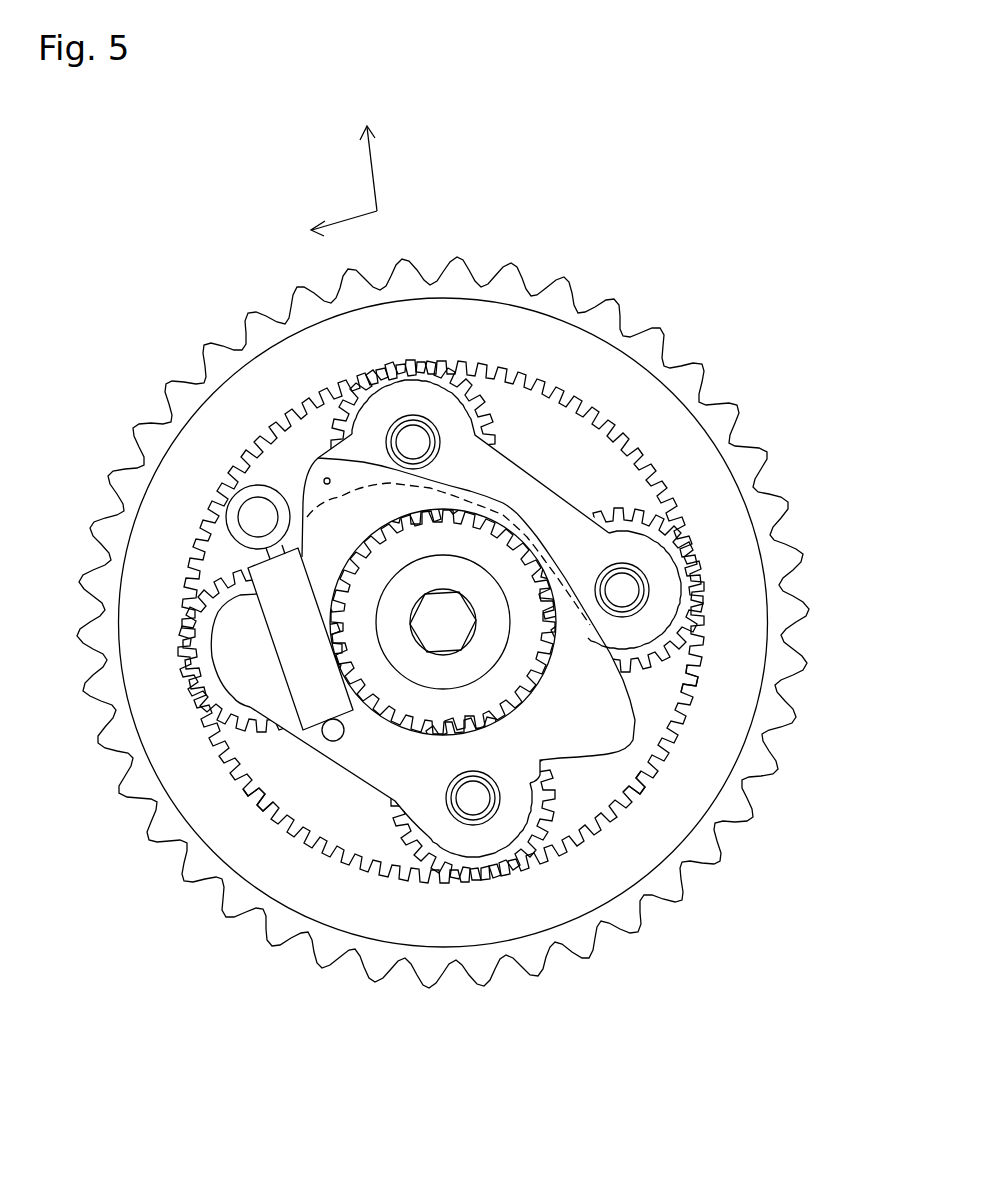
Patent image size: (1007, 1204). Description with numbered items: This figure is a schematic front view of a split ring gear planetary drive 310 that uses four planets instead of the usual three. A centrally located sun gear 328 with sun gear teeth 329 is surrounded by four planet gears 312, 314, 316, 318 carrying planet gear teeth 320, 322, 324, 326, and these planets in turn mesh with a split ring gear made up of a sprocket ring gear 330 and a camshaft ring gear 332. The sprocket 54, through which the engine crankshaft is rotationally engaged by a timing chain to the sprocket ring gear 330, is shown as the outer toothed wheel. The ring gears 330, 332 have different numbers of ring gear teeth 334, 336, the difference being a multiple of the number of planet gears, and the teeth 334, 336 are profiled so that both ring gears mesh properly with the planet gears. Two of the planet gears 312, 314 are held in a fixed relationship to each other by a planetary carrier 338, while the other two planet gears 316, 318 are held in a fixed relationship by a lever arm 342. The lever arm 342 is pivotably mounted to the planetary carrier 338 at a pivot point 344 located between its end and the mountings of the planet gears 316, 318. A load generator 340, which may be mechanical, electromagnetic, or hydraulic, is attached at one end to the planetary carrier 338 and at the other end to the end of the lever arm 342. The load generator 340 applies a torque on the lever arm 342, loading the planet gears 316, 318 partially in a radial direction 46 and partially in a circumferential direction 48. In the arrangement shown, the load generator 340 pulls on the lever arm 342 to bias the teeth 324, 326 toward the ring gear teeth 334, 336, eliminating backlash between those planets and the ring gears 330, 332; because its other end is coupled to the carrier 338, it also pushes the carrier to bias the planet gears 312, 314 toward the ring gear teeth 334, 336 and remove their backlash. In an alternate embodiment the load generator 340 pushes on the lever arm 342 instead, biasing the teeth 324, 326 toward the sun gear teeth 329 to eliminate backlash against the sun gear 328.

The sprocket 54 is at (183, 393).
The split ring gear planetary drive 310 is at (722, 205).
The radial direction 46 is at (386, 168).
The circumferential direction 48 is at (344, 212).
The fourth planet gear 318 is at (441, 550).
The planet gear teeth 320 is at (272, 728).
The planet gear teeth 322 is at (410, 837).
The planet gear teeth 324 is at (625, 522).
The planet gear teeth 326 is at (490, 440).
The sun gear 328 is at (398, 689).
The sun gear teeth 329 is at (522, 700).
The sprocket ring gear 330 is at (762, 616).
The camshaft ring gear 332 is at (637, 785).
The ring gear teeth 334 is at (272, 425).
The ring gear teeth 336 is at (263, 788).
The planetary carrier 338 is at (347, 768).
The load generator 340 is at (322, 652).
The lever arm 342 is at (510, 491).
The pivot point 344 is at (324, 481).
The first planet gear 312 is at (220, 697).
The second planet gear 314 is at (512, 853).
The third planet gear 316 is at (693, 653).